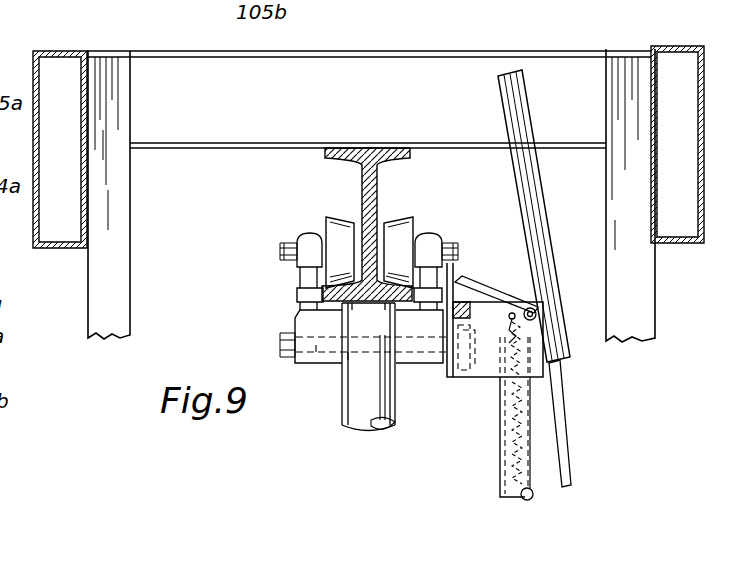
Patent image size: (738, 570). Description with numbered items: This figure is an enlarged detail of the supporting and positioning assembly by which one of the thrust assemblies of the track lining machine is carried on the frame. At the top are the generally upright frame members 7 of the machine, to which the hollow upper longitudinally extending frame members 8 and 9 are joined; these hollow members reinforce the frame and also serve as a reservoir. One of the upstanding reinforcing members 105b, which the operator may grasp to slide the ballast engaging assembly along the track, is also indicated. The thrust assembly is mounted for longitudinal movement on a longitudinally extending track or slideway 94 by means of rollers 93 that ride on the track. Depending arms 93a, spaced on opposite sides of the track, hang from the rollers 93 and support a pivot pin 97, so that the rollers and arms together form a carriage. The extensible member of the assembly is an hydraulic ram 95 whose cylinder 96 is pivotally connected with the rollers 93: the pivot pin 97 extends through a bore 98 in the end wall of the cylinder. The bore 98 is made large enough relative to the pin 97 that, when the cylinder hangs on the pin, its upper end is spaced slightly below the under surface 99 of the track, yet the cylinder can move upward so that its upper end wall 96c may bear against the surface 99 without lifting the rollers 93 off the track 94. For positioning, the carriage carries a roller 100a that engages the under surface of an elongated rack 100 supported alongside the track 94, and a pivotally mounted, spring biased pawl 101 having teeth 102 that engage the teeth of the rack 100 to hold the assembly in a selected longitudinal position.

The upright frame member 7 is at (122, 216).
The upper longitudinally extending frame member 8 is at (678, 46).
The upper longitudinally extending frame member 9 is at (62, 50).
The roller 93 is at (332, 216).
The depending arm 93a is at (302, 322).
The track 94 is at (362, 173).
The hydraulic ram 95 is at (339, 431).
The cylinder 96 is at (395, 409).
The upper end wall 96c is at (367, 317).
The pivot pin 97 is at (316, 350).
The bore 98 is at (366, 353).
The under surface of the track 99 is at (297, 296).
The rack 100 is at (456, 286).
The roller 100a is at (490, 438).
The pawl 101 is at (493, 298).
The teeth 102 is at (460, 284).
The upstanding reinforcing member 105b is at (369, 99).